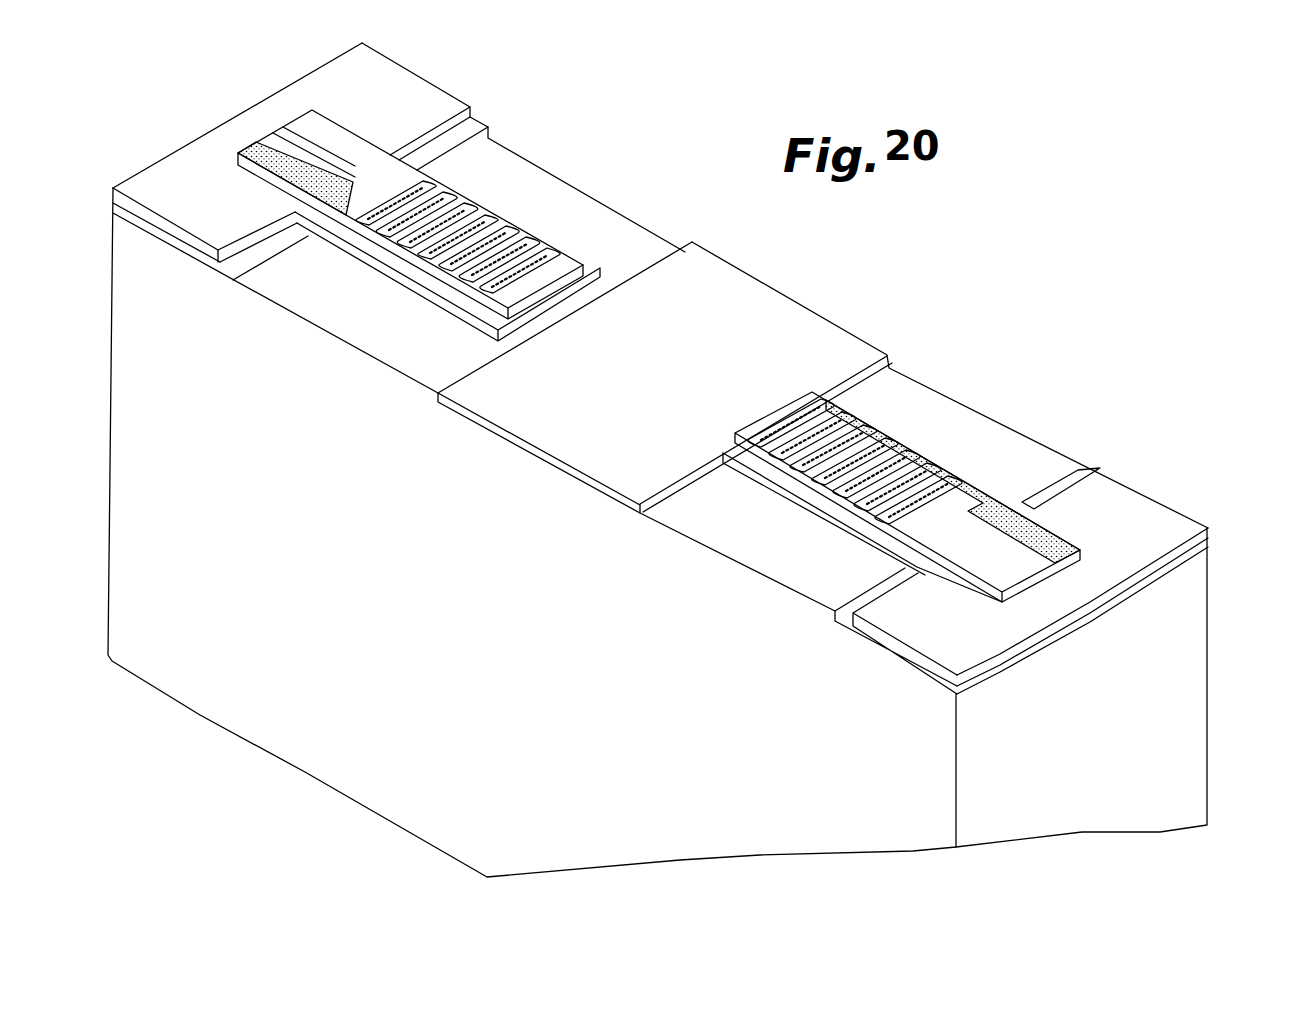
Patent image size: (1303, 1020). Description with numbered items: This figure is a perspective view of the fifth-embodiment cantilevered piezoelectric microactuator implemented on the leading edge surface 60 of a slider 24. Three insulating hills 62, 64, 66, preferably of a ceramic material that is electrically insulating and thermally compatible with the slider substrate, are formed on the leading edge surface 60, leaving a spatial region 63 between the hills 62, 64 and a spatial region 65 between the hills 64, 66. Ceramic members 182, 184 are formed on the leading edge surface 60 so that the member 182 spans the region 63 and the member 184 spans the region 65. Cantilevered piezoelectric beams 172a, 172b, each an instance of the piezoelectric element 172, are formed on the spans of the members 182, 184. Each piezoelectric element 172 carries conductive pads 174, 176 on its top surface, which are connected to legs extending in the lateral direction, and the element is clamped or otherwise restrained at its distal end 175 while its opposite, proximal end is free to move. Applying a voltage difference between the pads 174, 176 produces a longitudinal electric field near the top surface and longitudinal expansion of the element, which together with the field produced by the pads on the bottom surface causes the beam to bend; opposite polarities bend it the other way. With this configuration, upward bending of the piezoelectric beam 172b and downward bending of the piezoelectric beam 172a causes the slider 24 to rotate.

The slider 24 is at (1187, 682).
The leading edge surface 60 is at (557, 195).
The hill 62 is at (248, 277).
The region 63 is at (347, 325).
The hill 64 is at (487, 388).
The region 65 is at (740, 540).
The hill 66 is at (833, 603).
The piezoelectric element 172 is at (837, 498).
The piezoelectric beam 172a is at (342, 154).
The piezoelectric beam 172b is at (1040, 550).
The conductive pad 174 is at (313, 122).
The distal end 175 is at (282, 128).
The conductive pad 176 is at (275, 158).
The ceramic member 182 is at (433, 108).
The ceramic member 184 is at (1152, 530).